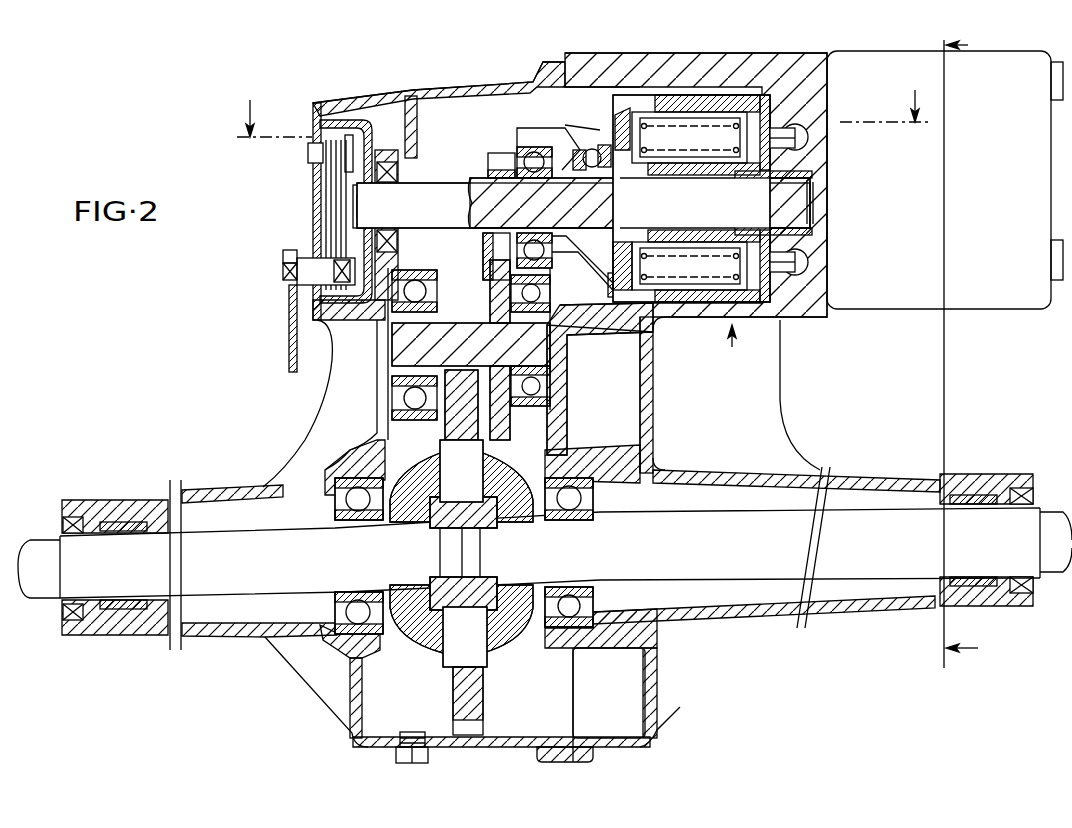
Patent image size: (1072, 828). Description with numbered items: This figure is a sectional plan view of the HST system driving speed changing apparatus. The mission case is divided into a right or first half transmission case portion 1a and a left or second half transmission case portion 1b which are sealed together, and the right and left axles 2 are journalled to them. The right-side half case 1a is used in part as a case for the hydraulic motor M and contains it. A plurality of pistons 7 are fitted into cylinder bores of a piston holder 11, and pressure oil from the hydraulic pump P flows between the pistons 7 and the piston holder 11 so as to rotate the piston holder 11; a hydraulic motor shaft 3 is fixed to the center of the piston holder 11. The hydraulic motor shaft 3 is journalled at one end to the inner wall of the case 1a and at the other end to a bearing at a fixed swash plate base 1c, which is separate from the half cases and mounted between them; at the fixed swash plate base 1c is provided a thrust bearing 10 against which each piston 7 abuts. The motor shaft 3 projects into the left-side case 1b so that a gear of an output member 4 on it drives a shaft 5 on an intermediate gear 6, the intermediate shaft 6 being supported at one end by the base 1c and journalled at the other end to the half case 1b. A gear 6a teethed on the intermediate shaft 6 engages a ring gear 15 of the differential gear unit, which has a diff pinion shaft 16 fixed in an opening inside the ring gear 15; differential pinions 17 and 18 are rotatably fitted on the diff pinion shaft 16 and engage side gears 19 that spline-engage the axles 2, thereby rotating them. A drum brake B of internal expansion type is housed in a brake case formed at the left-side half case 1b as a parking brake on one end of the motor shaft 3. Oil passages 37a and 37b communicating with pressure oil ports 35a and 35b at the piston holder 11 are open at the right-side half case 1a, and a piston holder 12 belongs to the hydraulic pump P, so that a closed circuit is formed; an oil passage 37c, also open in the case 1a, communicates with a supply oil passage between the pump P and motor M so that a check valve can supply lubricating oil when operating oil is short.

The right-side half transmission case portion 1a is at (775, 402).
The left-side half transmission case portion 1b is at (327, 440).
The fixed swash plate base 1c is at (597, 330).
The axle 2 is at (284, 583).
The hydraulic motor shaft 3 is at (560, 236).
The output member 4 is at (498, 152).
The shaft 5 is at (492, 274).
The intermediate gear 6 is at (403, 357).
The gear 6a is at (481, 312).
The piston 7 is at (632, 73).
The thrust bearing 10 is at (592, 147).
The piston holder 11 is at (708, 303).
The piston holder 12 is at (584, 97).
The ring gear 15 is at (477, 707).
The diff pinion shaft 16 is at (468, 488).
The diff pinion 17 is at (510, 458).
The diff pinion 18 is at (428, 652).
The side gear 19 is at (408, 533).
The pressure oil port 35a is at (828, 165).
The pressure oil port 35b is at (828, 240).
The oil passage 37a is at (828, 62).
The oil passage 37b is at (830, 266).
The oil passage 37c is at (905, 124).
The drum brake B is at (287, 186).
The hydraulic motor M is at (737, 346).
The hydraulic pump P is at (986, 228).